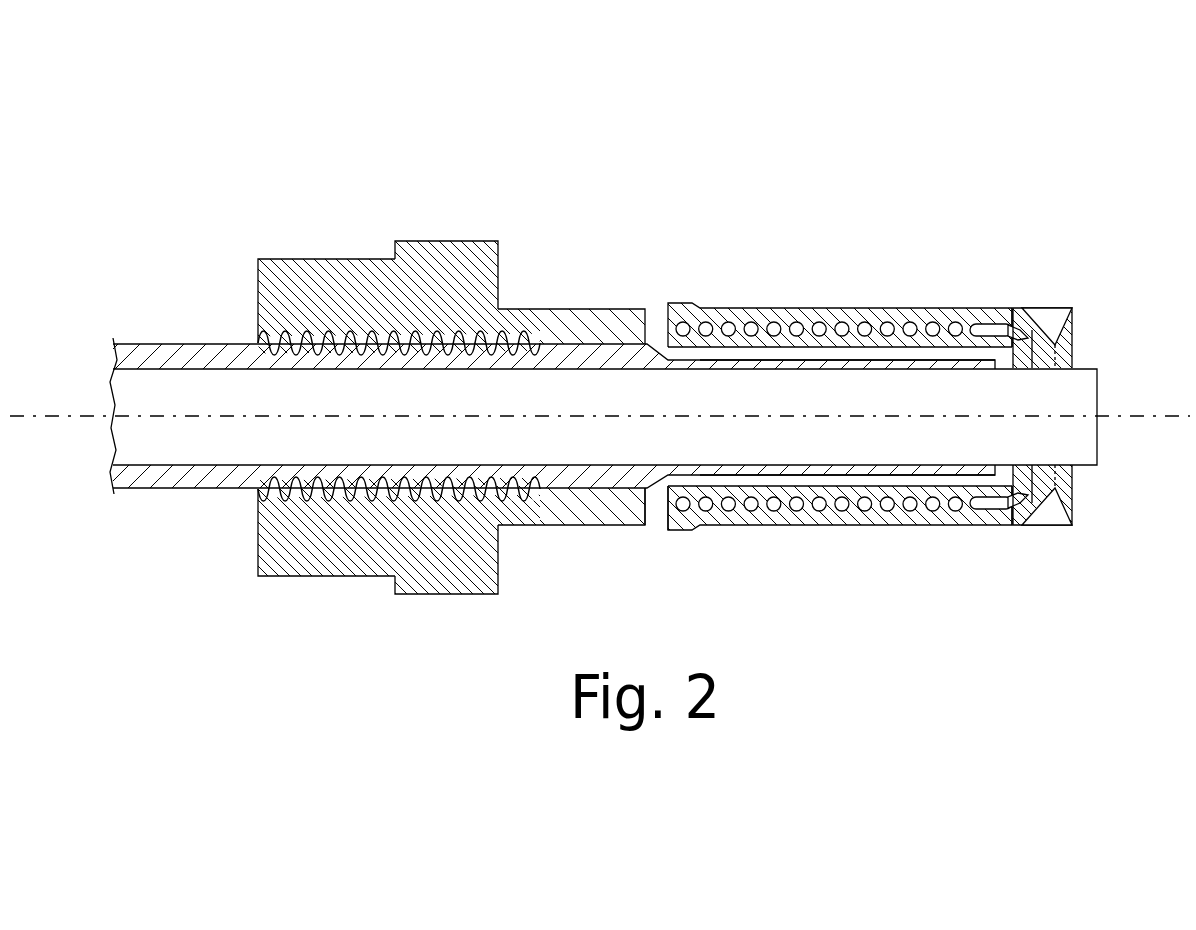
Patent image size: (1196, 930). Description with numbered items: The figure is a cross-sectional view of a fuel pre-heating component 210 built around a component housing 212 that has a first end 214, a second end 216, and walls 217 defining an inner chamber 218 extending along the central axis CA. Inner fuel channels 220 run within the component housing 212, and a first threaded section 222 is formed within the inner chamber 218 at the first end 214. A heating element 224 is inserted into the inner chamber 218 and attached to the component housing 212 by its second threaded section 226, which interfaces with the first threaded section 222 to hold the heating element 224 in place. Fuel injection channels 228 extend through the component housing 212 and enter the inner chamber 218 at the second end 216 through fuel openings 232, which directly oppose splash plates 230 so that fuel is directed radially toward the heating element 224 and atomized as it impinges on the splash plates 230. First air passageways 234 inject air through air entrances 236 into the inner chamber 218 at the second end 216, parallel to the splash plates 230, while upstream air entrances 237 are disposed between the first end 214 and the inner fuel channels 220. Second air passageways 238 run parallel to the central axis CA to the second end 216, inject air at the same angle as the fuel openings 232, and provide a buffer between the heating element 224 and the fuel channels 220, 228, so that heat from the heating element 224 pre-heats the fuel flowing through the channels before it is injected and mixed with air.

The fuel pre-heating component 210 is at (385, 115).
The component housing 212 is at (682, 304).
The first end 214 is at (318, 258).
The second end 216 is at (1060, 308).
The walls 217 is at (418, 287).
The inner chamber 218 is at (690, 356).
The inner fuel channels 220 is at (842, 328).
The first threaded section 222 is at (485, 338).
The heating element 224 is at (580, 393).
The second threaded section 226 is at (540, 337).
The fuel injection channels 228 is at (973, 323).
The splash plates 230 is at (1047, 333).
The fuel openings 232 is at (1022, 508).
The first air passageways 234 is at (993, 308).
The air entrances 236 is at (1020, 312).
The upstream air entrances 237 is at (655, 530).
The second air passageways 238 is at (786, 361).
The central axis CA is at (1154, 414).